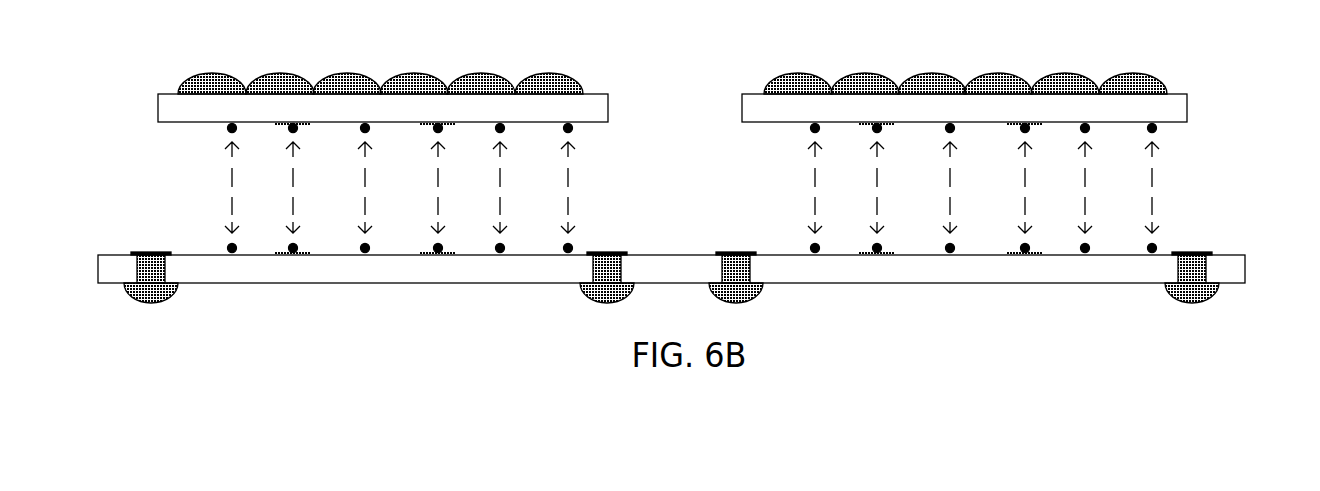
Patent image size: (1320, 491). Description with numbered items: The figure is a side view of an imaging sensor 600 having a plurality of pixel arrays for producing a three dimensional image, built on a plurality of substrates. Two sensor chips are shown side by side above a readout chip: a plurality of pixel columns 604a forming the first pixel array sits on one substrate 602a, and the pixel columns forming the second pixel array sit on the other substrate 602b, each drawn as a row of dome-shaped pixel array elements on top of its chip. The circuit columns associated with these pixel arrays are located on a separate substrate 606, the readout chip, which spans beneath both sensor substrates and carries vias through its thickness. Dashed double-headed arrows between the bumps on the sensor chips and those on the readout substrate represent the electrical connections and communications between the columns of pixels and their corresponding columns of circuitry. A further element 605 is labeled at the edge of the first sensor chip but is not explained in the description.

The imaging sensor 600 is at (1177, 208).
The substrate 602a is at (758, 117).
The substrate 602b is at (267, 75).
The pixel columns 604a is at (1160, 80).
The sensor chip substrate 605 is at (178, 118).
The separate substrate 606 is at (263, 268).